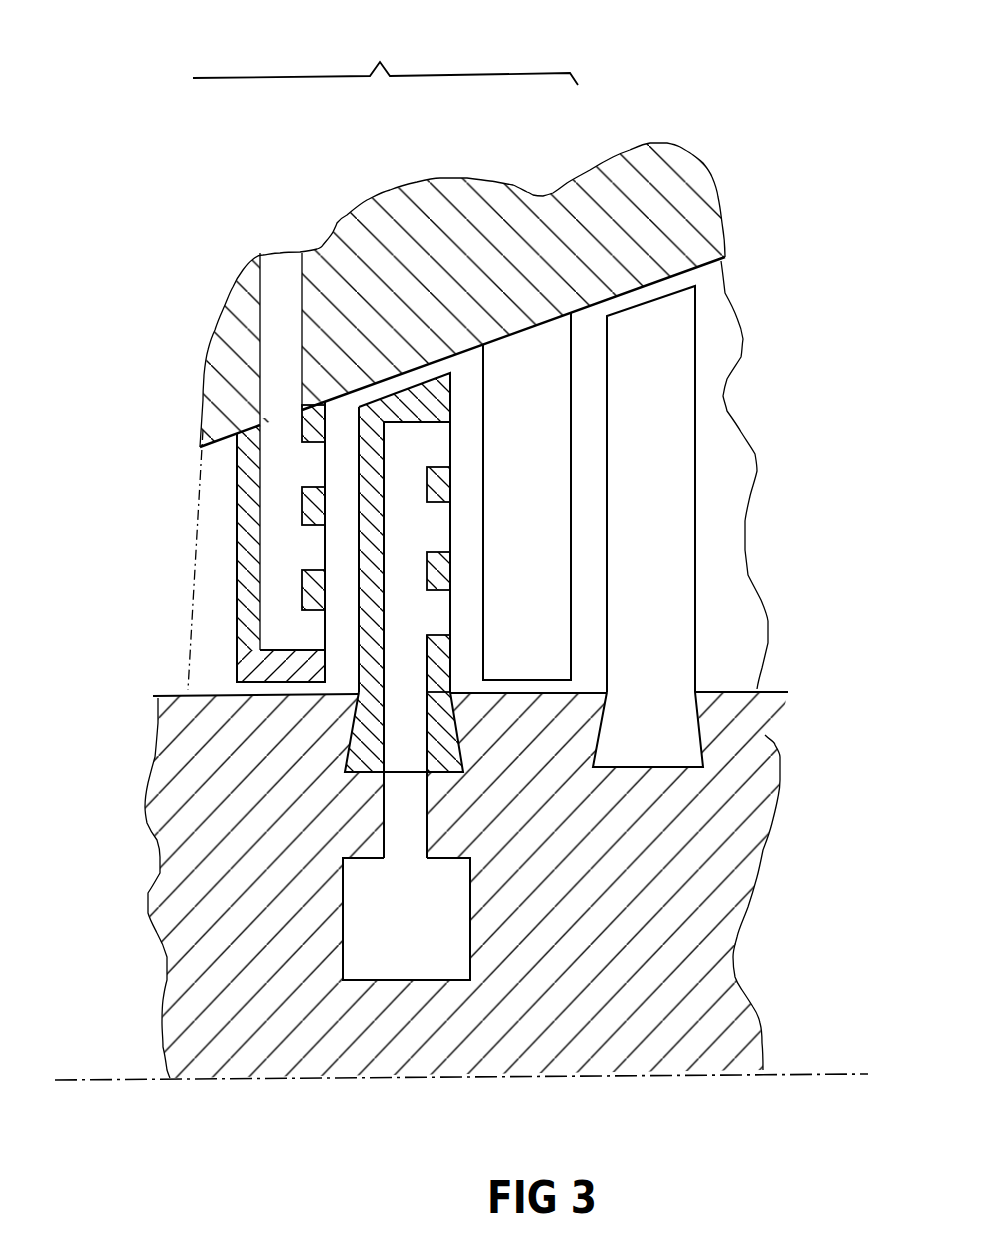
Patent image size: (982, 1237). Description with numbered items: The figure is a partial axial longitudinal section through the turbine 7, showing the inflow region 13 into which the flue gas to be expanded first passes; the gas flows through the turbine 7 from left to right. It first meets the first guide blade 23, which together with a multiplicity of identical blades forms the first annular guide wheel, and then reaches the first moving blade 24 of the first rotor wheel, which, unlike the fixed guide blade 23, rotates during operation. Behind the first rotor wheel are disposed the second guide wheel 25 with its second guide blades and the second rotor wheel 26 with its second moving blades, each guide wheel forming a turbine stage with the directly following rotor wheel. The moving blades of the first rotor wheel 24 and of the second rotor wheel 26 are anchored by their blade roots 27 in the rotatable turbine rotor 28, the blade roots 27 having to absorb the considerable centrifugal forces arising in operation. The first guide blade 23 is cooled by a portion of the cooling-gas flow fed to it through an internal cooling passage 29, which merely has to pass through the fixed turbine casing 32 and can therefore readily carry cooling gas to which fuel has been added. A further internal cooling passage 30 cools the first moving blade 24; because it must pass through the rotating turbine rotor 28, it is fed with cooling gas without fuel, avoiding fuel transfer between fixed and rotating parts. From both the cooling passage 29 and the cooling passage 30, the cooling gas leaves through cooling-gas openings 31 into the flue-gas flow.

The inflow region 13 is at (385, 51).
The first guide blade 23 is at (237, 540).
The first moving blade 24 is at (455, 626).
The second guide wheel 25 is at (547, 406).
The second rotor wheel 26 is at (671, 564).
The blade root 27 is at (667, 738).
The turbine rotor 28 is at (207, 837).
The internal cooling passage 29 is at (279, 284).
The internal cooling passage 30 is at (365, 937).
The cooling-gas opening 31 is at (318, 462).
The turbine casing 32 is at (663, 211).
The turbine 7 is at (425, 1127).